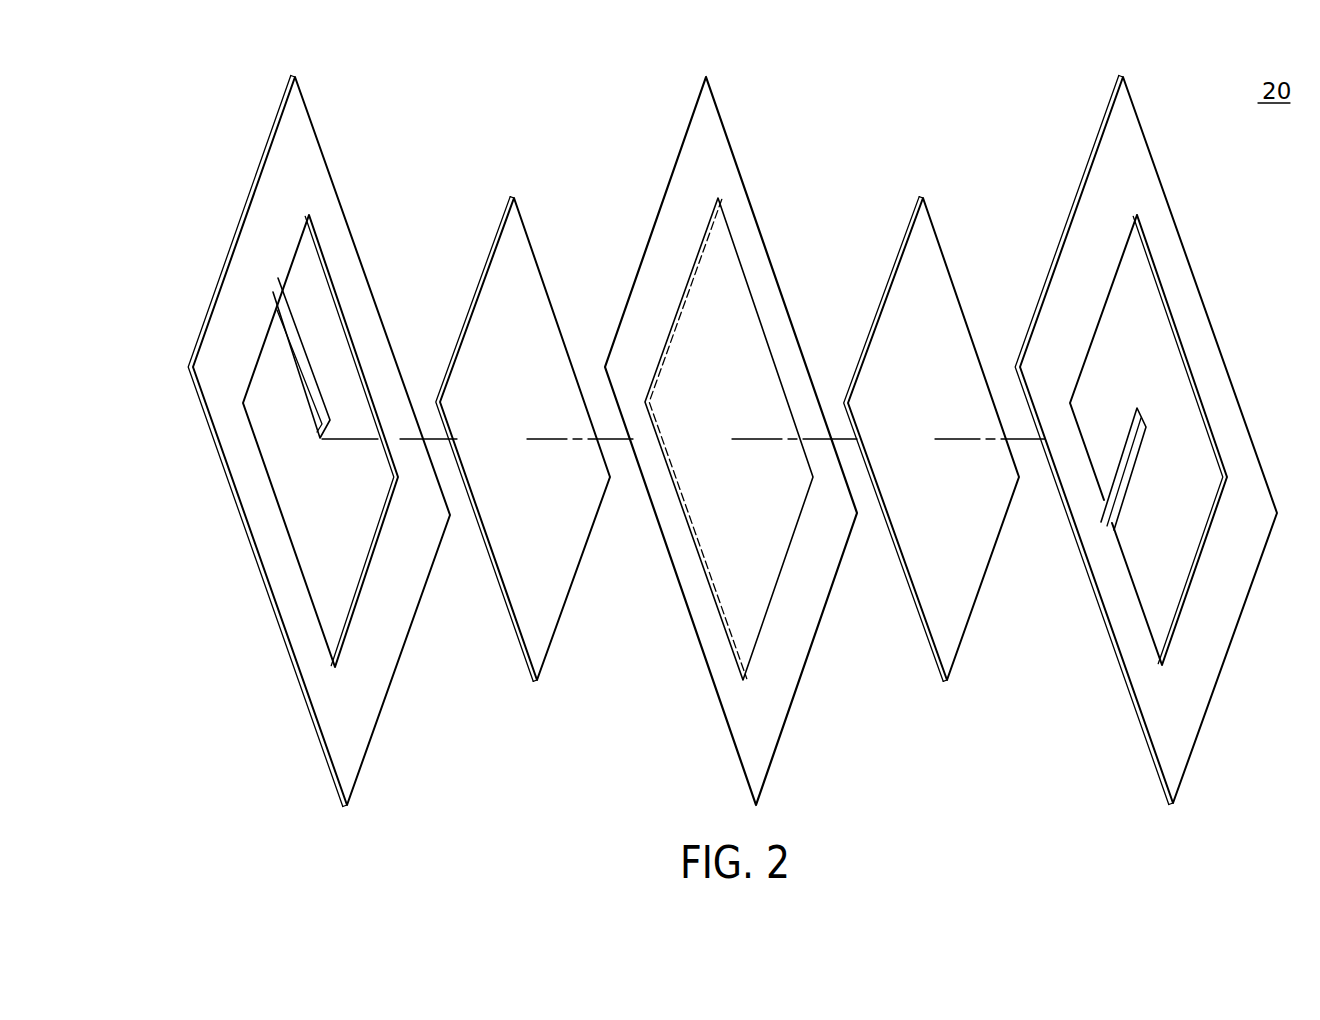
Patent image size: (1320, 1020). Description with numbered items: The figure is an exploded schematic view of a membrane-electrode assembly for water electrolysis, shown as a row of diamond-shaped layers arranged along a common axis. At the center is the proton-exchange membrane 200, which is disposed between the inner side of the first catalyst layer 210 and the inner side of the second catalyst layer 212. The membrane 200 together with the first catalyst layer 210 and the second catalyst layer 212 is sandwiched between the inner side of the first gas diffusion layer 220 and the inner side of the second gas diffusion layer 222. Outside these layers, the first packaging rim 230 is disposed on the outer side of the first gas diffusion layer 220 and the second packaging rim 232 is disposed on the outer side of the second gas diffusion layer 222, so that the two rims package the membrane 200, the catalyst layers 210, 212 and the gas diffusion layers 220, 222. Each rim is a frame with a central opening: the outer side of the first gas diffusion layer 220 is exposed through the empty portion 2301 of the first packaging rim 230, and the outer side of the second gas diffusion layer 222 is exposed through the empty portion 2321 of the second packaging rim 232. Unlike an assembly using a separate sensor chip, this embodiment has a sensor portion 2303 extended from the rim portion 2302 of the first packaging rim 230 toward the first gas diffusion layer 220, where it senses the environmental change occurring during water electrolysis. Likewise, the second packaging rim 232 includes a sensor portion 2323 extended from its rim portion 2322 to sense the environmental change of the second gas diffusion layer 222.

The proton-exchange membrane 200 is at (663, 197).
The first catalyst layer 210 is at (727, 257).
The second catalyst layer 212 is at (680, 298).
The first gas diffusion layer 220 is at (893, 313).
The second gas diffusion layer 222 is at (480, 308).
The first packaging rim 230 is at (1068, 215).
The empty portion of the first packaging rim 2301 is at (1150, 335).
The rim portion of the first packaging rim 2302 is at (1173, 273).
The sensor portion of the first packaging rim 2303 is at (1127, 432).
The second packaging rim 232 is at (243, 222).
The empty portion of the second packaging rim 2321 is at (317, 315).
The rim portion of the second packaging rim 2322 is at (278, 548).
The sensor portion of the second packaging rim 2323 is at (308, 377).